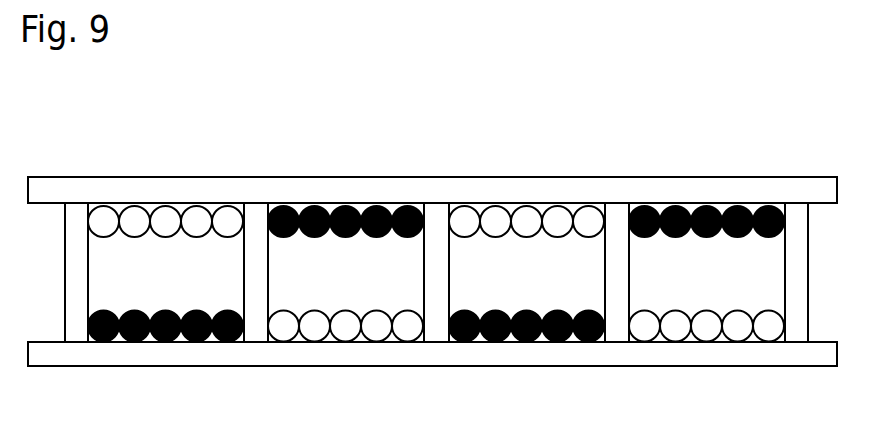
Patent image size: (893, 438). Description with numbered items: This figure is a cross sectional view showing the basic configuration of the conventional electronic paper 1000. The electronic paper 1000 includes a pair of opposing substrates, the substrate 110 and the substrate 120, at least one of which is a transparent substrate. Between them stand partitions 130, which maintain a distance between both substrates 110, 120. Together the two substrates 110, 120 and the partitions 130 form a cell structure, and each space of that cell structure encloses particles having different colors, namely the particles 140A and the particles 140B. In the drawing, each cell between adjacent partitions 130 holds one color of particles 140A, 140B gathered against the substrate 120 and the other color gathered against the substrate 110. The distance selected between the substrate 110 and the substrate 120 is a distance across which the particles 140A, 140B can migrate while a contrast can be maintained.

The electronic paper 1000 is at (719, 153).
The substrate 110 is at (508, 352).
The substrate 120 is at (500, 188).
The partition 130 is at (618, 298).
The particles 140A is at (351, 204).
The particles 140B is at (165, 217).